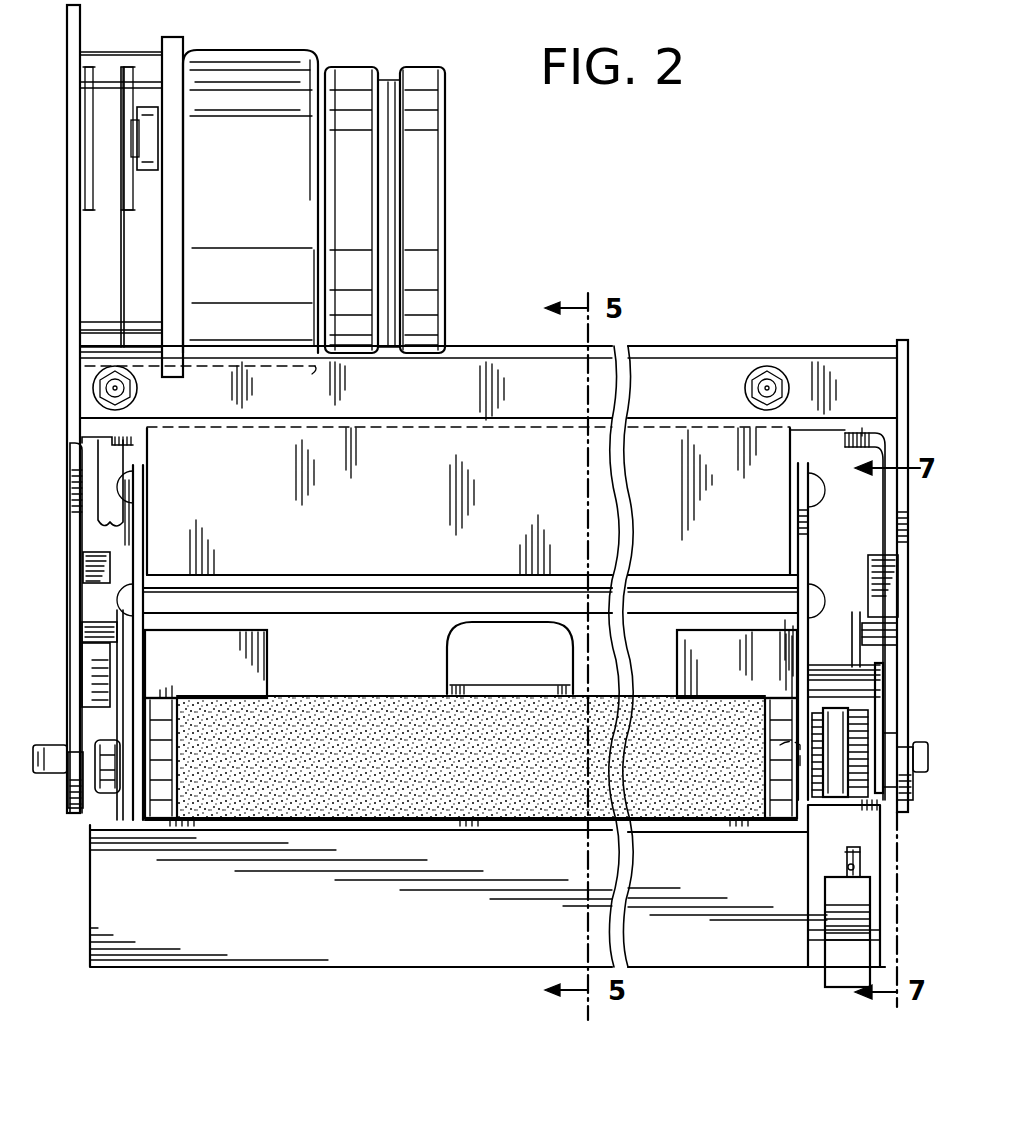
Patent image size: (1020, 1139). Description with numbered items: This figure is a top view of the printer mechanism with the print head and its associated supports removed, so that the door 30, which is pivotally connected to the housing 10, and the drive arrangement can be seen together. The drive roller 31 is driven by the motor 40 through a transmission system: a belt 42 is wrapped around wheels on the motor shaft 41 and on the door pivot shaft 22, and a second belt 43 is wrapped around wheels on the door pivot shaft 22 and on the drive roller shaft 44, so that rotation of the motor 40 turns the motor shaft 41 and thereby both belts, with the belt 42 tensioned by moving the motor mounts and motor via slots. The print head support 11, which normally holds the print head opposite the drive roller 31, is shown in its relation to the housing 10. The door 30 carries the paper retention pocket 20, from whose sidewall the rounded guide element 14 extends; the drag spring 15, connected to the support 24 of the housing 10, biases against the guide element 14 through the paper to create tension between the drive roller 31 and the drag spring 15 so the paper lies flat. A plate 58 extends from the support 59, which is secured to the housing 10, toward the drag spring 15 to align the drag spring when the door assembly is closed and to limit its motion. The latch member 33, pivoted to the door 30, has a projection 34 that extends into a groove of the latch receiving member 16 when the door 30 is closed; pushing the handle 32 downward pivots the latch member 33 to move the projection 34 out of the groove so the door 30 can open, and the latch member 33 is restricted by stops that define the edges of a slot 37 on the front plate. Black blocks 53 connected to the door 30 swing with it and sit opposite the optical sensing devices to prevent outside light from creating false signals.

The housing 10 is at (72, 408).
The print head support 11 is at (485, 763).
The rounded guide element 14 is at (250, 612).
The drag spring 15 is at (698, 590).
The latch receiving member 16 is at (108, 553).
The paper retention pocket 20 is at (401, 663).
The door pivot shaft 22 is at (57, 747).
The support 24 is at (815, 430).
The door 30 is at (473, 926).
The drive roller 31 is at (862, 847).
The handle 32 is at (835, 928).
The latch member 33 is at (845, 857).
The projection 34 is at (102, 632).
The slot 37 is at (848, 868).
The motor 40 is at (266, 203).
The motor shaft 41 is at (143, 137).
The belt 42 is at (110, 230).
The belt 43 is at (837, 726).
The drive roller shaft 44 is at (130, 768).
The blocks 53 is at (231, 669).
The plate 58 is at (383, 521).
The support 59 is at (708, 397).